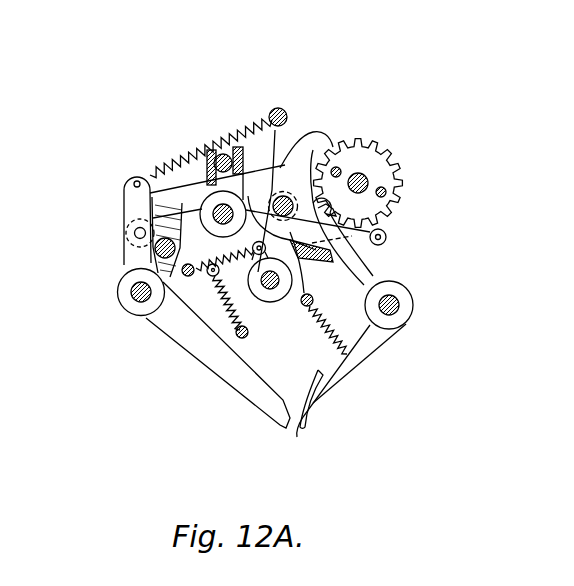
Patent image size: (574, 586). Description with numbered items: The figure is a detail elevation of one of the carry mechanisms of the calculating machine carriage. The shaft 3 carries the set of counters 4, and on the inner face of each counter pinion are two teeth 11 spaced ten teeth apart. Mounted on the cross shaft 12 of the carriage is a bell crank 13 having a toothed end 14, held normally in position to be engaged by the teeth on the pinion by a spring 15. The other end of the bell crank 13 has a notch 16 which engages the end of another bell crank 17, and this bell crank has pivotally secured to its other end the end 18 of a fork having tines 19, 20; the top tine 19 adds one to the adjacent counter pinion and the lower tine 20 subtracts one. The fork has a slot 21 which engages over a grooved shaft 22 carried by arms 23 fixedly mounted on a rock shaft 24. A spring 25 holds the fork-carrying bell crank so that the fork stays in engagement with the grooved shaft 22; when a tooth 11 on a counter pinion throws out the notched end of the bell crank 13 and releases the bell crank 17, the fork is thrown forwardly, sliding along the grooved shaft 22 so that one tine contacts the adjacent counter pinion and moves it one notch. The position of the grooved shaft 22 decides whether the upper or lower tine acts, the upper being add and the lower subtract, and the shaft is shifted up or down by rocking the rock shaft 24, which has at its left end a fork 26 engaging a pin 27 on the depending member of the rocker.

The shaft 3 is at (366, 179).
The counters 4 is at (397, 170).
The teeth 11 is at (400, 190).
The cross shaft 12 is at (400, 305).
The bell cranks 13 is at (375, 340).
The toothed end 14 is at (340, 211).
The springs 15 is at (323, 322).
The notch 16 is at (298, 427).
The bell crank 17 is at (190, 332).
The end of fork 18 is at (170, 203).
The top tine of fork 19 is at (322, 134).
The lower tine of fork 20 is at (324, 317).
The slot 21 is at (297, 192).
The grooved shaft 22 is at (276, 131).
The arms 23 is at (272, 301).
The rock shaft 24 is at (212, 218).
The springs 25 is at (170, 162).
The fork 26 is at (241, 146).
The pin 27 is at (224, 152).